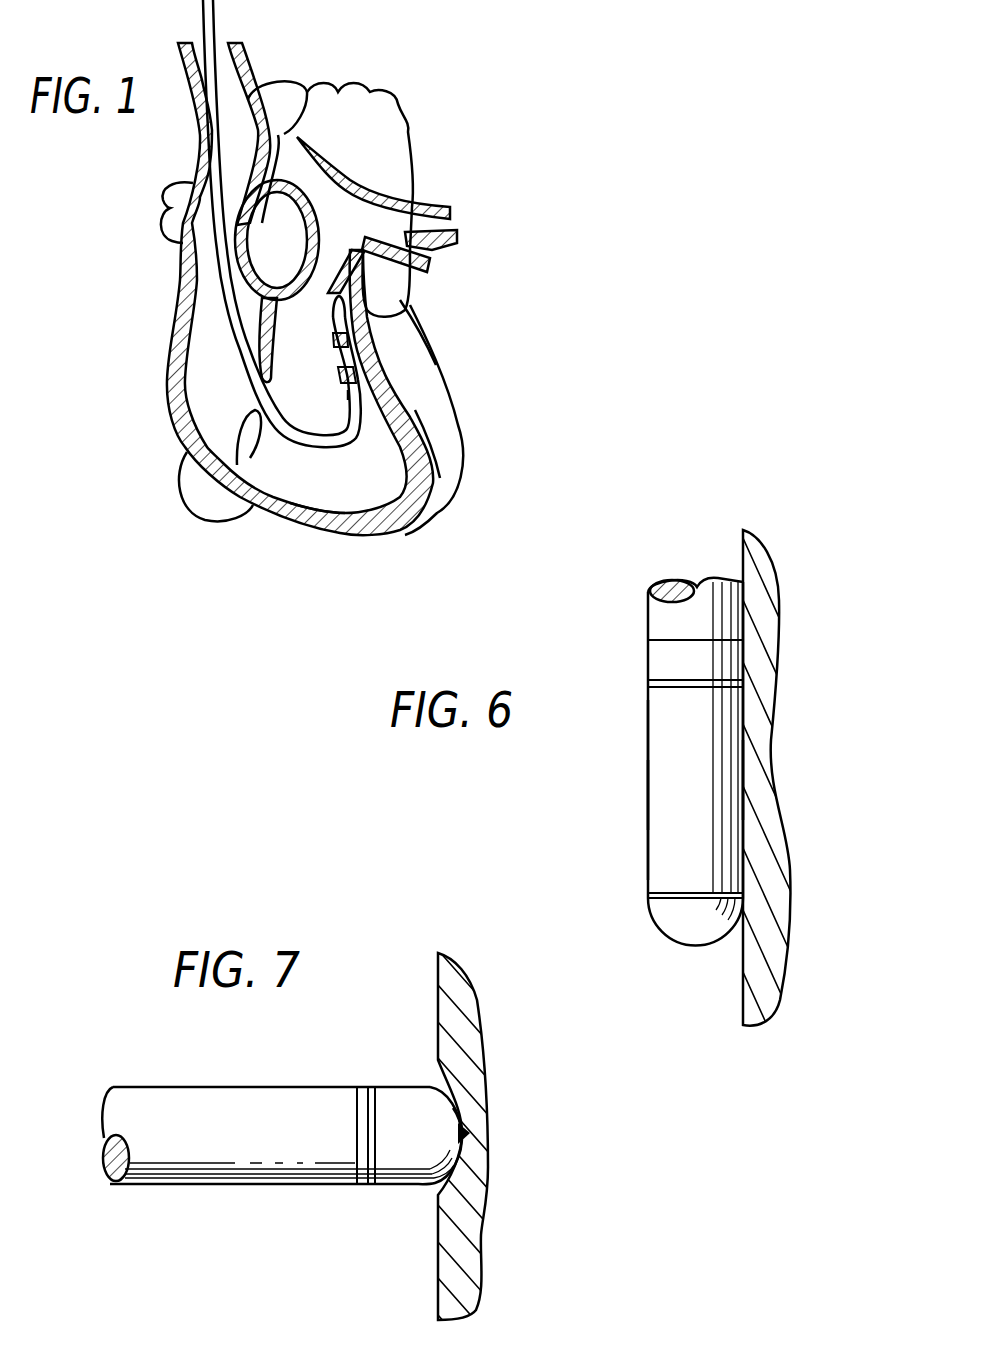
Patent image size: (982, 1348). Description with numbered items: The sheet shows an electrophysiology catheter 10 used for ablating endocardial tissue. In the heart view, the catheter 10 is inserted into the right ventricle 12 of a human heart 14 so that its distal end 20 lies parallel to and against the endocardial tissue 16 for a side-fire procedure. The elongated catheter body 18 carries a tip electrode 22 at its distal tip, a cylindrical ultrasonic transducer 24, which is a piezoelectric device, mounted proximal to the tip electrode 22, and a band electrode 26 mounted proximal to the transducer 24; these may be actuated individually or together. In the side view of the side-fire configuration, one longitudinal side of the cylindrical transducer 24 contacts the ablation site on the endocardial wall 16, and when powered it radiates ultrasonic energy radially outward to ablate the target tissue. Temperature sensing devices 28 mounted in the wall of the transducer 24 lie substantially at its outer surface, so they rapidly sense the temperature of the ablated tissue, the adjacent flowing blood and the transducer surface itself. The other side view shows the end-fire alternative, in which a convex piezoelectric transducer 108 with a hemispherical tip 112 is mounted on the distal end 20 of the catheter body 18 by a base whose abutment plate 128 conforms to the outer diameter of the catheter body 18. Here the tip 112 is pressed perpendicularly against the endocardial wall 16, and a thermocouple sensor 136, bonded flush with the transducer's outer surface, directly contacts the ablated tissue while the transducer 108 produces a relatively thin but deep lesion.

In FIG. 1, the EP catheter 10 is at (207, 390).
In FIG. 1, the right ventricle 12 is at (298, 490).
In FIG. 1, the human heart 14 is at (423, 327).
In FIG. 1, the endocardial tissue 16 is at (403, 456).
In FIG. 6, the endocardial tissue 16 is at (748, 966).
In FIG. 7, the endocardial tissue 16 is at (438, 1037).
In FIG. 1, the catheter body 18 is at (201, 318).
In FIG. 6, the catheter body 18 is at (648, 617).
In FIG. 7, the catheter body 18 is at (223, 1087).
In FIG. 1, the distal end 20 is at (369, 422).
In FIG. 6, the distal end 20 is at (598, 664).
In FIG. 7, the distal end 20 is at (258, 1200).
In FIG. 1, the tip electrode 22 is at (322, 321).
In FIG. 6, the tip electrode 22 is at (637, 923).
In FIG. 1, the cylindrical ultrasonic transducer 24 is at (318, 358).
In FIG. 6, the cylindrical ultrasonic transducer 24 is at (637, 730).
In FIG. 1, the band electrode 26 is at (375, 368).
In FIG. 6, the band electrode 26 is at (636, 660).
In FIG. 6, the temperature sensing devices 28 is at (637, 798).
In FIG. 7, the convex piezoelectric transducer 108 is at (393, 1088).
In FIG. 7, the hemispherical tip 112 is at (452, 1106).
In FIG. 7, the abutment plate 128 is at (363, 1188).
In FIG. 7, the thermocouple sensor 136 is at (486, 1129).